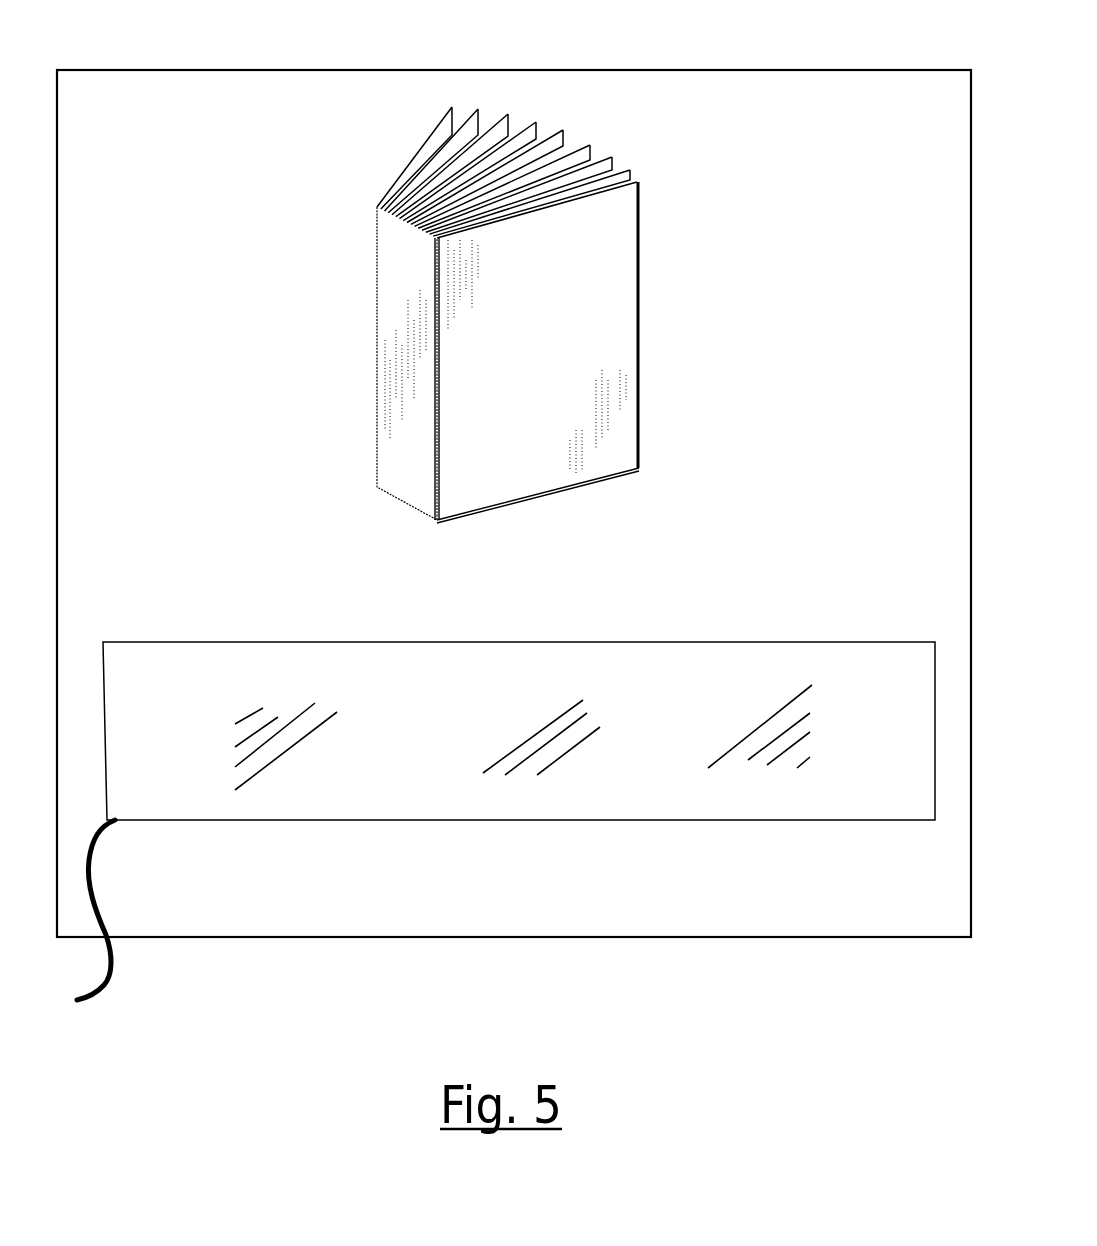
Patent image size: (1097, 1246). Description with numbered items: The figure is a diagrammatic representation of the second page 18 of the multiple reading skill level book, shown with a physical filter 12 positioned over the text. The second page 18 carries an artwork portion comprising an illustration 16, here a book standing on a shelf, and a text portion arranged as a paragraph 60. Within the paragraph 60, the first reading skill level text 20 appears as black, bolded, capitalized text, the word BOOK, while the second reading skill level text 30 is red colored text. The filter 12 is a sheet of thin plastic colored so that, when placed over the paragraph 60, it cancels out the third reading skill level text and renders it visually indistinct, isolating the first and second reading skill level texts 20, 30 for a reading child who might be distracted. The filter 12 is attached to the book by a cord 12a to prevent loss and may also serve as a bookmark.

The second page 18 is at (813, 113).
The diagram or illustration 16 is at (380, 315).
The physical filter 12 is at (519, 752).
The first reading skill level text 20 is at (202, 663).
The second reading skill level text 30 is at (493, 663).
The cord 12a is at (98, 837).
The paragraph 60 is at (682, 597).